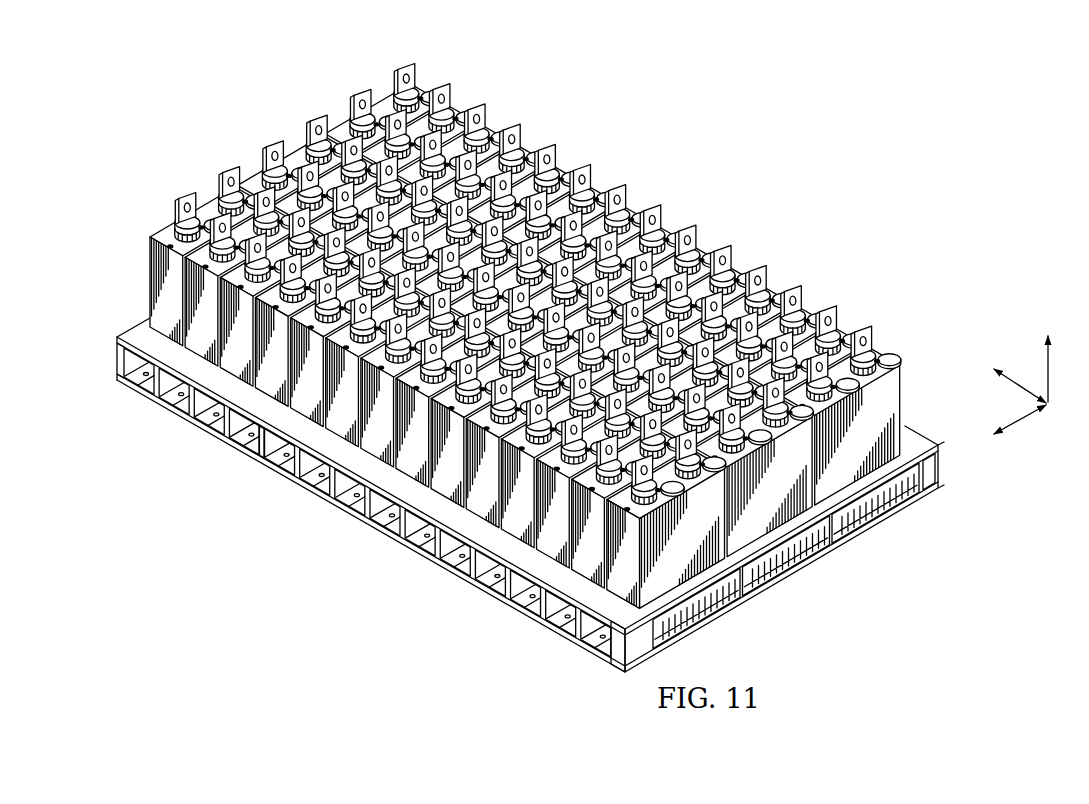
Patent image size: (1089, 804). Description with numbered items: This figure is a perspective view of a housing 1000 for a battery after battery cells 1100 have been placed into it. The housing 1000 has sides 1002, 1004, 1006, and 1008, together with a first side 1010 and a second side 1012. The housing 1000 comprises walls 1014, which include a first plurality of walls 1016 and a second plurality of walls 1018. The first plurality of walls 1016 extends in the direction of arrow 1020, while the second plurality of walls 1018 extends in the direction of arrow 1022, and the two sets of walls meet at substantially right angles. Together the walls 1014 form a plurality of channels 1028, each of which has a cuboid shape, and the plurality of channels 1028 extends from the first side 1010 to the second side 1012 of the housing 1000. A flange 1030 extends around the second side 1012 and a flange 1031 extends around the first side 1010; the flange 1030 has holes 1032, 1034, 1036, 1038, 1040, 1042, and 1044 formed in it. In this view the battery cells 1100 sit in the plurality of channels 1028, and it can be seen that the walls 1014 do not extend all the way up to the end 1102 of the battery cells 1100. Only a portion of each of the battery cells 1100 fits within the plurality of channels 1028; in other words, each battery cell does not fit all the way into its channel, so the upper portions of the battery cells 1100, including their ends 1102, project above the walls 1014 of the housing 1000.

The housing 1000 is at (204, 117).
The side 1002 is at (148, 326).
The side 1004 is at (644, 213).
The side 1006 is at (758, 570).
The side 1008 is at (122, 363).
The first side 1010 is at (921, 448).
The second side 1012 is at (265, 458).
The walls 1014 is at (340, 136).
The first plurality of walls 1016 is at (845, 490).
The second plurality of walls 1018 is at (824, 323).
The arrow 1020 is at (1021, 378).
The arrow 1022 is at (1023, 422).
The plurality of channels 1028 is at (529, 185).
The flange 1030 is at (607, 650).
The flange 1031 is at (130, 334).
The hole 1032 is at (188, 405).
The hole 1034 is at (255, 443).
The hole 1036 is at (322, 490).
The hole 1038 is at (347, 517).
The hole 1040 is at (447, 547).
The hole 1042 is at (498, 587).
The hole 1044 is at (557, 637).
The battery cells 1100 is at (740, 252).
The end 1102 is at (894, 366).